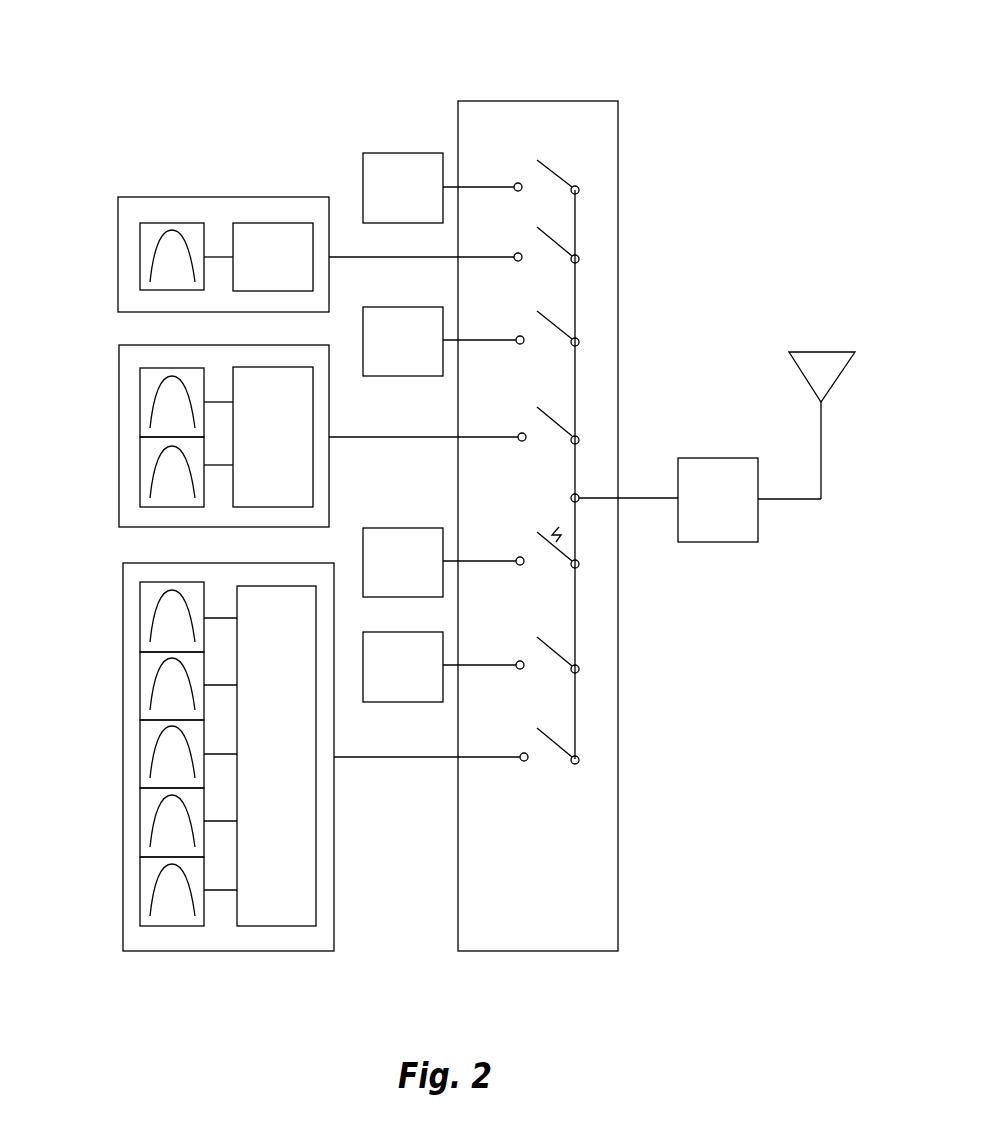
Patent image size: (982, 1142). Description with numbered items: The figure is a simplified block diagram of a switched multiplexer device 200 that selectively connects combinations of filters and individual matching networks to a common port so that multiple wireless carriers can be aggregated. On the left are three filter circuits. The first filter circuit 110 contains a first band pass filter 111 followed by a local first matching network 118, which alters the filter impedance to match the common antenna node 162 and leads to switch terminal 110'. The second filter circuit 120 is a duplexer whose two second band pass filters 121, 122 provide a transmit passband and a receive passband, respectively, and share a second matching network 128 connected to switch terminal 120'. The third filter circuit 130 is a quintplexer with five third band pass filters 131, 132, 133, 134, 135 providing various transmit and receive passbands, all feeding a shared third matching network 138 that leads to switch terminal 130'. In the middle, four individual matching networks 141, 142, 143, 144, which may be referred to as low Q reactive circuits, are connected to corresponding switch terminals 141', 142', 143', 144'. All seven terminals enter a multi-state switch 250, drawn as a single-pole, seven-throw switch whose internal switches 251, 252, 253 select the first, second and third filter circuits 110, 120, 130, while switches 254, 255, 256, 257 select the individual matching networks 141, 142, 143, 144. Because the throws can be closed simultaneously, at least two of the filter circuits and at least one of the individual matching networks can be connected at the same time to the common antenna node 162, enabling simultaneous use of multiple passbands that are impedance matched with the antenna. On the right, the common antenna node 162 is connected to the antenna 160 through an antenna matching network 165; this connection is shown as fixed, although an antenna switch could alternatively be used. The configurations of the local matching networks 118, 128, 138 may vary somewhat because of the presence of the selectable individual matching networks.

The switched multiplexer device 200 is at (457, 29).
The first filter circuit 110 is at (279, 245).
The first band pass filter 111 is at (140, 267).
The first matching network 118 is at (273, 257).
The second filter circuit 120 is at (280, 428).
The second band pass filter 121 is at (140, 412).
The second band pass filter 122 is at (140, 478).
The second matching network 128 is at (273, 437).
The third filter circuit 130 is at (283, 745).
The third band pass filter 131 is at (140, 628).
The third band pass filter 132 is at (140, 682).
The third band pass filter 133 is at (140, 756).
The third band pass filter 134 is at (140, 826).
The third band pass filter 135 is at (140, 896).
The third matching network 138 is at (276, 756).
The individual matching network 141 is at (438, 188).
The individual matching network 142 is at (439, 341).
The individual matching network 143 is at (439, 562).
The individual matching network 144 is at (439, 667).
The switch terminal 141' is at (502, 172).
The switch terminal 142' is at (503, 326).
The switch terminal 143' is at (503, 547).
The switch terminal 144' is at (503, 651).
The switch terminal 110' is at (502, 243).
The switch terminal 120' is at (505, 424).
The switch terminal 130' is at (506, 743).
The multi-state switch 250 is at (618, 129).
The switch 251 is at (556, 237).
The switch 252 is at (556, 420).
The switch 253 is at (556, 737).
The switch 254 is at (556, 171).
The switch 255 is at (556, 321).
The switch 256 is at (606, 503).
The switch 257 is at (556, 648).
The antenna 160 is at (790, 353).
The common antenna node 162 is at (580, 497).
The antenna matching network 165 is at (758, 542).